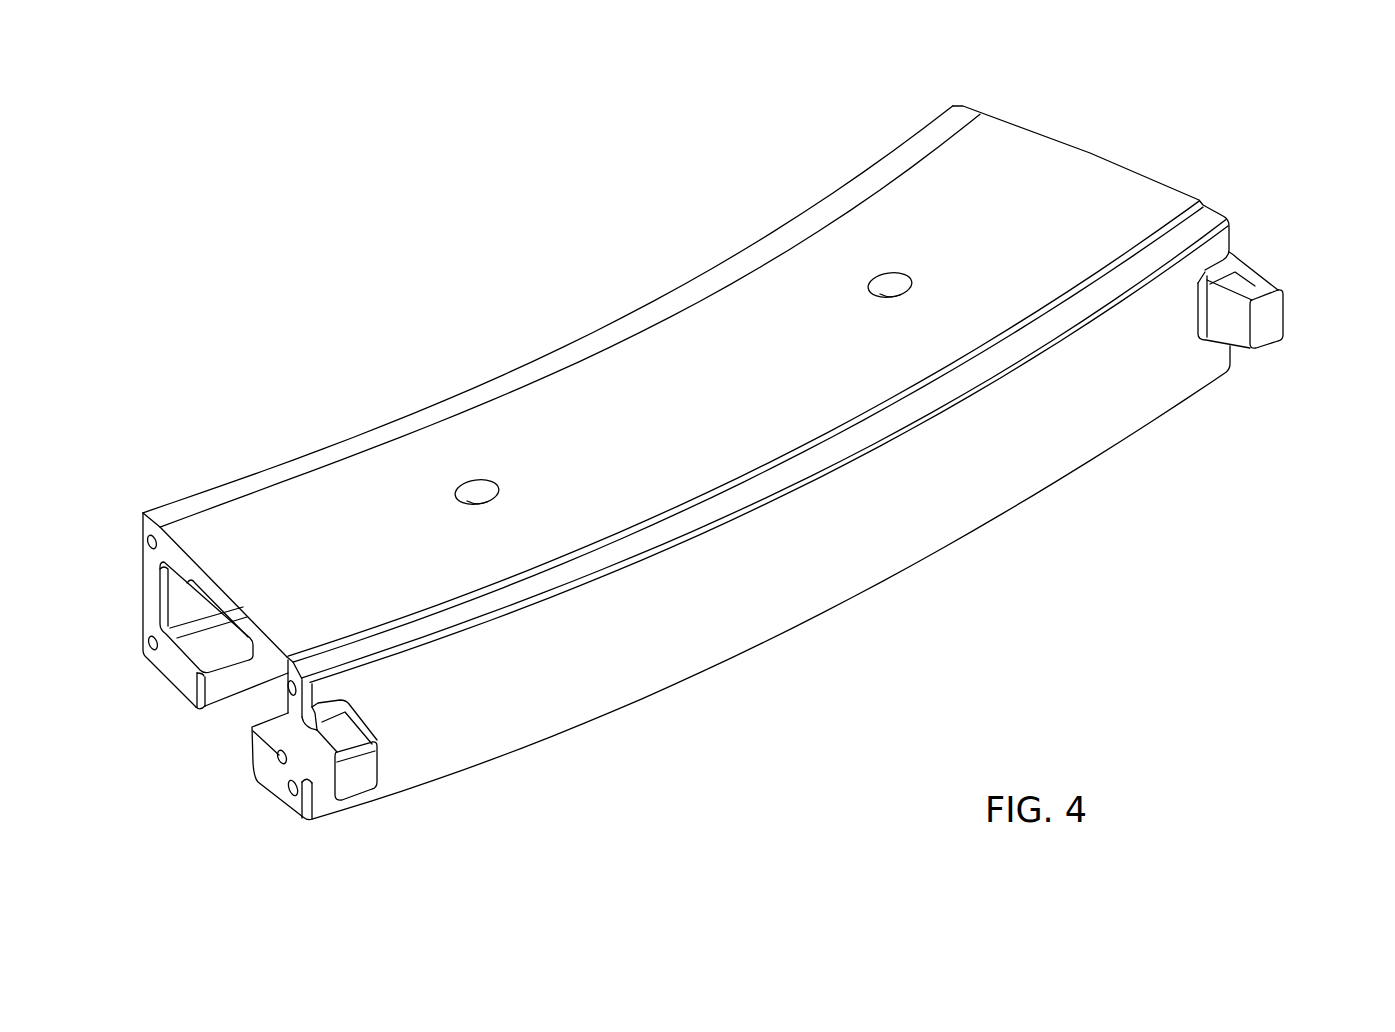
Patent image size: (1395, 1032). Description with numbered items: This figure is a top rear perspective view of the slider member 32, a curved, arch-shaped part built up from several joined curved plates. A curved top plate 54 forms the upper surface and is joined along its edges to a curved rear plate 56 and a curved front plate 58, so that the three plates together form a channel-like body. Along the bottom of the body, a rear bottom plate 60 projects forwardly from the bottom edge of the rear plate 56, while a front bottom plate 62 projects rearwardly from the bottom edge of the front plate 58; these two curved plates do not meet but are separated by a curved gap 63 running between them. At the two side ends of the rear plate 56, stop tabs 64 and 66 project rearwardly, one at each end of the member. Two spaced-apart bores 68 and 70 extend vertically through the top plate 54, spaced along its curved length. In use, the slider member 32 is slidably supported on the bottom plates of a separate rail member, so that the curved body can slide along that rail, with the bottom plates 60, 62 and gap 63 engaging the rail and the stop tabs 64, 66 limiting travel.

The slider member 32 is at (881, 593).
The curved top plate 54 is at (1075, 197).
The curved rear plate 56 is at (1045, 415).
The curved front plate 58 is at (150, 595).
The rear bottom plate 60 is at (268, 768).
The front bottom plate 62 is at (177, 673).
The curved gap 63 is at (228, 690).
The stop tab 64 is at (1270, 322).
The stop tab 66 is at (356, 777).
The bore 68 is at (879, 293).
The bore 70 is at (497, 481).